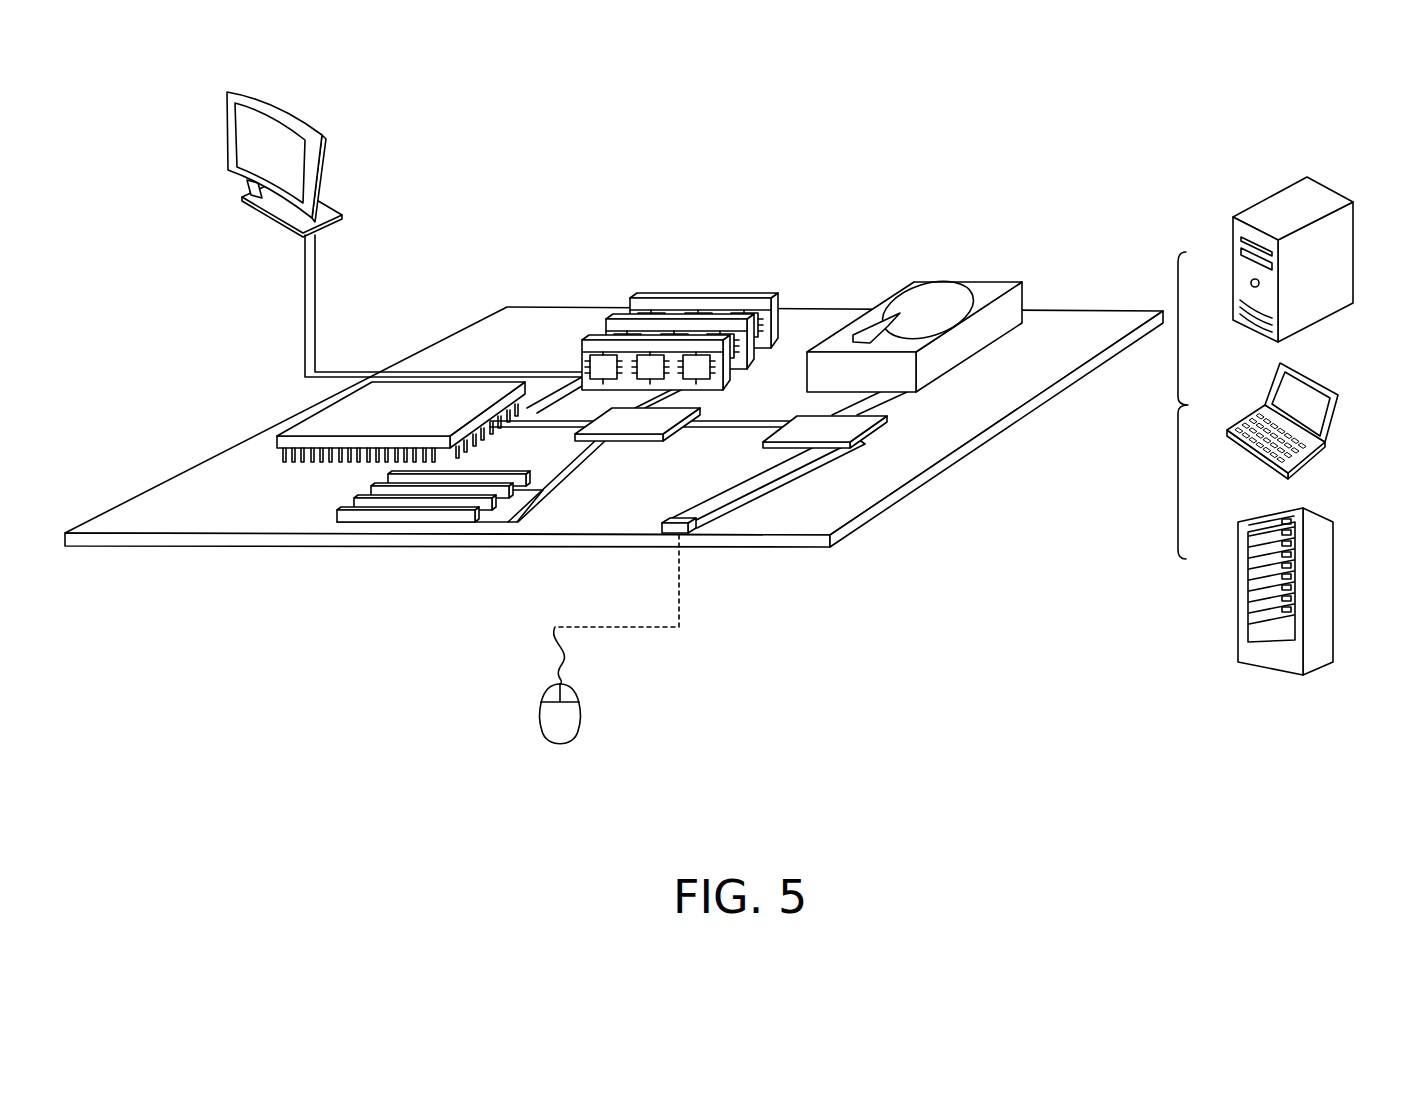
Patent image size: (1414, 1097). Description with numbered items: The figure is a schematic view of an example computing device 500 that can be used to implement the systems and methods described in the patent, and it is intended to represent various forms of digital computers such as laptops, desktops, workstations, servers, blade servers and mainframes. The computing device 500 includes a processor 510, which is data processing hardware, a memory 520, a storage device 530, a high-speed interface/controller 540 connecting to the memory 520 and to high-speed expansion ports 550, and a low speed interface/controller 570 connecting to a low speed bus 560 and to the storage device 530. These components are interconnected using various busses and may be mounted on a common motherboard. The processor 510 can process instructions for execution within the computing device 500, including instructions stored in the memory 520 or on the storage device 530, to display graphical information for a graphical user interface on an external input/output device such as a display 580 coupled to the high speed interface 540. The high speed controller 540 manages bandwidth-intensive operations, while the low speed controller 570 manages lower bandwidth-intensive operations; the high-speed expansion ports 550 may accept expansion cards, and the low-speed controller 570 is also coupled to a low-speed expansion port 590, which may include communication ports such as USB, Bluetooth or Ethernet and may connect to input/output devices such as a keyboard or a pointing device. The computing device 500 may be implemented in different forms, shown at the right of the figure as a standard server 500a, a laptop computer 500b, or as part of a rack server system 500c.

The computing device 500 is at (782, 155).
The processor 510 is at (272, 438).
The memory 520 is at (697, 298).
The storage device 530 is at (966, 283).
The high-speed interface/controller 540 is at (645, 442).
The high-speed expansion ports 550 is at (337, 510).
The low speed bus 560 is at (815, 422).
The low speed interface/controller 570 is at (767, 482).
The display 580 is at (228, 142).
The low-speed expansion port 590 is at (688, 540).
The standard server 500a is at (1262, 197).
The laptop computer 500b is at (1318, 384).
The rack server system 500c is at (1333, 565).